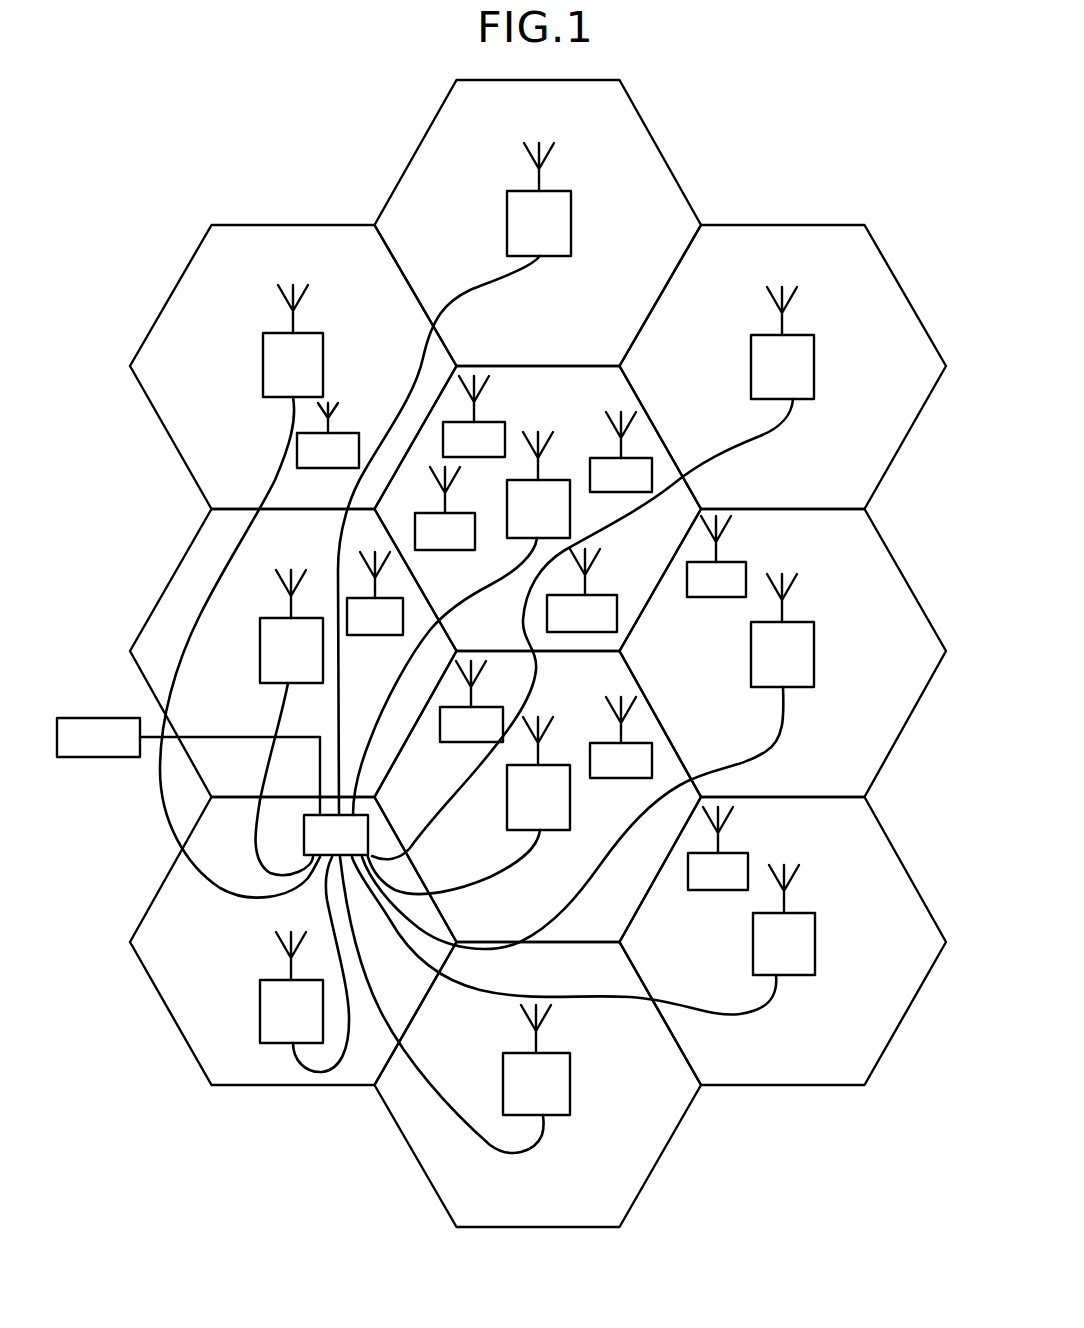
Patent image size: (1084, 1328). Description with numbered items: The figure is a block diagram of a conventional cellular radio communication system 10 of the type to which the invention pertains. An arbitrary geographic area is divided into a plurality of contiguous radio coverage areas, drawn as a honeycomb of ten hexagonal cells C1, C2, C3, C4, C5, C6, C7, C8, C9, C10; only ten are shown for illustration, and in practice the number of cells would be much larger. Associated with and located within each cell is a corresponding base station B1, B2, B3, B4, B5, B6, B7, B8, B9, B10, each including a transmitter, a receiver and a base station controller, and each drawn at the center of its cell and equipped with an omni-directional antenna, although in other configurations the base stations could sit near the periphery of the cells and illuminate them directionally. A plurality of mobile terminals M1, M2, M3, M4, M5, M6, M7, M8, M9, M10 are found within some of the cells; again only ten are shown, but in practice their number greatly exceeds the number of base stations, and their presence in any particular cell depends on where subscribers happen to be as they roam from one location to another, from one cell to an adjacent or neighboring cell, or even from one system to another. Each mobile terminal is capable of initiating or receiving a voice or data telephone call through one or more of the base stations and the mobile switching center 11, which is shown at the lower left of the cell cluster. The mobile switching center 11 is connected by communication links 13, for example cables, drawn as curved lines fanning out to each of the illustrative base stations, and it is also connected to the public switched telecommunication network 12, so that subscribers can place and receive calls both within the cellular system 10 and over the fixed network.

The cellular radio communication system 10 is at (538, 653).
The mobile switching center 11 is at (368, 839).
The public switched telecommunication network 12 is at (90, 757).
The communication links 13 is at (327, 900).
The base station B1 is at (538, 485).
The base station B2 is at (782, 343).
The base station B3 is at (782, 630).
The base station B4 is at (538, 773).
The base station B5 is at (291, 626).
The base station B6 is at (293, 341).
The base station B7 is at (539, 199).
The base station B8 is at (784, 920).
The base station B9 is at (536, 1060).
The base station B10 is at (291, 987).
The mobile terminal M1 is at (718, 848).
The mobile terminal M2 is at (375, 593).
The mobile terminal M3 is at (445, 508).
The mobile terminal M4 is at (621, 452).
The mobile terminal M5 is at (716, 556).
The mobile terminal M6 is at (474, 416).
The mobile terminal M7 is at (582, 590).
The mobile terminal M8 is at (621, 737).
The mobile terminal M9 is at (471, 701).
The mobile terminal M10 is at (328, 435).
The cell C1 is at (488, 646).
The cell C2 is at (744, 508).
The cell C3 is at (846, 795).
The cell C4 is at (616, 933).
The cell C5 is at (242, 793).
The cell C6 is at (248, 508).
The cell C7 is at (494, 355).
The cell C8 is at (739, 1073).
The cell C9 is at (489, 1212).
The cell C10 is at (247, 1072).